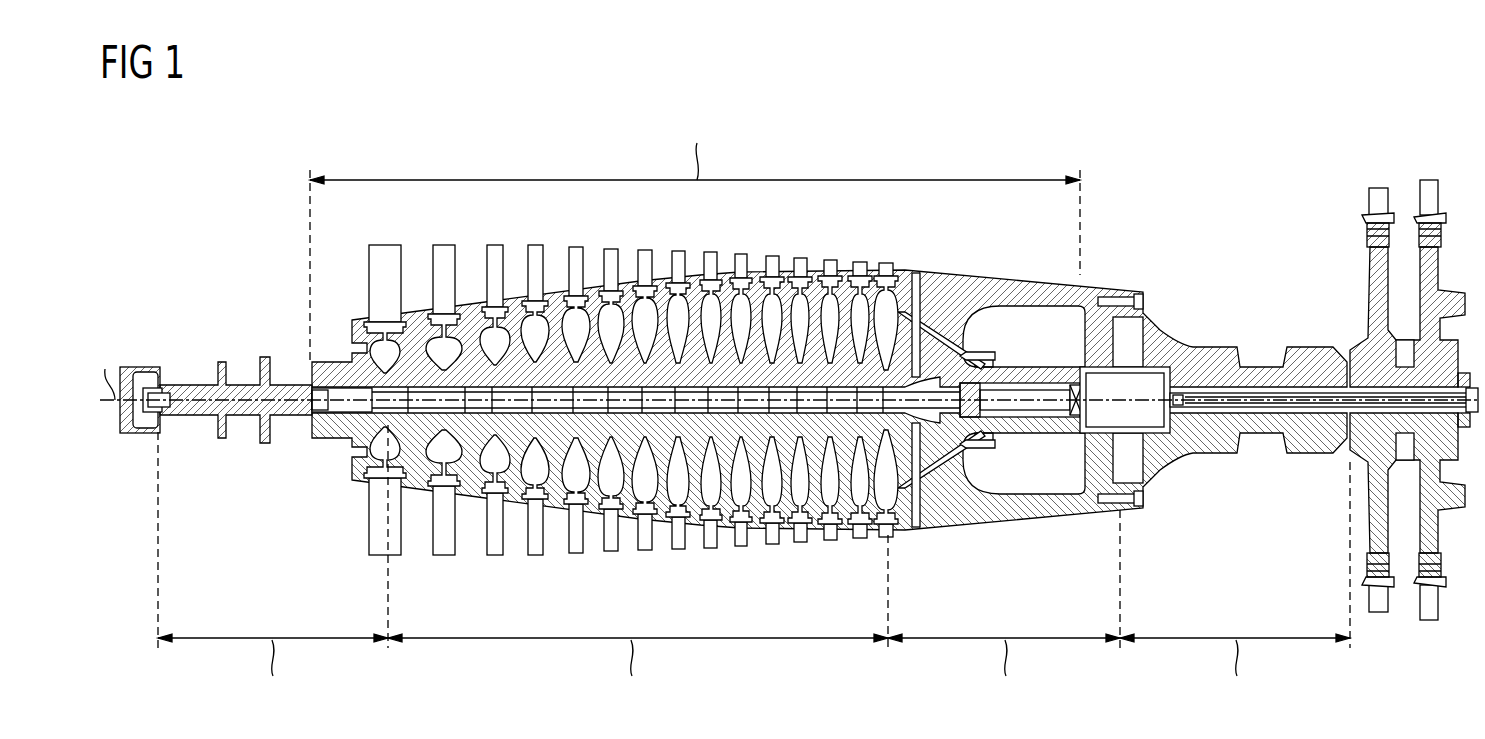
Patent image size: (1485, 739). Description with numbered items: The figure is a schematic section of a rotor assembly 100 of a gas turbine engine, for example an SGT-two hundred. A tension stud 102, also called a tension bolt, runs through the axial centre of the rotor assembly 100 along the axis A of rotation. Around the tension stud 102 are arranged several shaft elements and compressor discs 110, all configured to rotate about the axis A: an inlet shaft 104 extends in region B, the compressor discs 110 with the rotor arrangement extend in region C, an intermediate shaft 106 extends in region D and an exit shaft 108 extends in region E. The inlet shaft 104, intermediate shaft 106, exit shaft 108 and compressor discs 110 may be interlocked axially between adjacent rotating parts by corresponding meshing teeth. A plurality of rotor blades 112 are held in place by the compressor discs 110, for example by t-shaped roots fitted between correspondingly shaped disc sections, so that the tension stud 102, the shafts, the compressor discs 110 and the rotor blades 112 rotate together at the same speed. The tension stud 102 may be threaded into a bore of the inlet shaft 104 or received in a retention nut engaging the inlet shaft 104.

The rotor assembly 100 is at (400, 128).
The tension stud 102 is at (1020, 400).
The inlet shaft 104 is at (303, 430).
The intermediate shaft 106 is at (960, 523).
The exit shaft 108 is at (1230, 450).
The compressor discs 110 is at (648, 528).
The rotor blades 112 is at (575, 245).